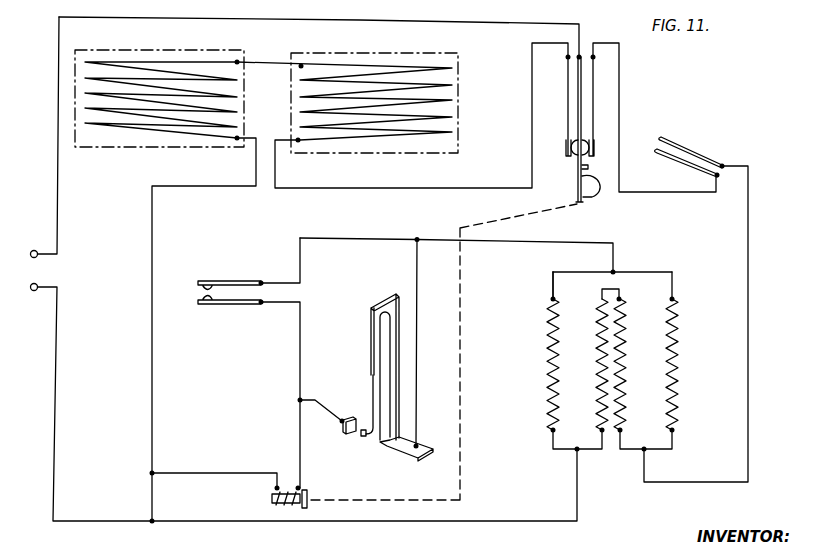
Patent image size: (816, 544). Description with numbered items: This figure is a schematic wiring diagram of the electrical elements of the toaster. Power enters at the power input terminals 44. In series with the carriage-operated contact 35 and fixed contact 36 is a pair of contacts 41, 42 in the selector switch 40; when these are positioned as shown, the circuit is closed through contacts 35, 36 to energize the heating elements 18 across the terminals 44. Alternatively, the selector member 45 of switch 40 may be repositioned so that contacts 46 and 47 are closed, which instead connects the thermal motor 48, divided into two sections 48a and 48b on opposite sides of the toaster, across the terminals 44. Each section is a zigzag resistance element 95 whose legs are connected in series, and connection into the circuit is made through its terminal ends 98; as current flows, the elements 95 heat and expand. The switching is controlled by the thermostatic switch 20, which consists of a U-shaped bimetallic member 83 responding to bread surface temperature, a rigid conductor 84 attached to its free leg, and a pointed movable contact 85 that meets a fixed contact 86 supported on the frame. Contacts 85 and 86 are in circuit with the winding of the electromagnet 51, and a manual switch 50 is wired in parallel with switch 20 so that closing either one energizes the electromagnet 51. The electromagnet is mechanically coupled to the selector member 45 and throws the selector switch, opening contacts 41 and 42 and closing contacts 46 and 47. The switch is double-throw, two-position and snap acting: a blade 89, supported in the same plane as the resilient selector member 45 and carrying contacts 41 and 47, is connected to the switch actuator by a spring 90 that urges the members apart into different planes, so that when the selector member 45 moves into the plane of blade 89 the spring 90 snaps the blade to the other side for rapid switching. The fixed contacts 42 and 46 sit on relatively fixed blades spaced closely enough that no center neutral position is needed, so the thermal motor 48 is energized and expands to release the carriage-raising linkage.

The heating elements 18 is at (543, 336).
The thermostatic switch 20 is at (370, 308).
The contact 35 is at (663, 136).
The fixed contact 36 is at (656, 155).
The selector switch 40 is at (569, 187).
The contact 41 is at (589, 146).
The contact 42 is at (590, 152).
The power input terminals 44 is at (40, 285).
The selector member 45 is at (577, 166).
The contact 46 is at (566, 152).
The contact 47 is at (573, 143).
The thermal motor 48 is at (254, 49).
The thermal motor section 48a is at (387, 68).
The thermal motor section 48b is at (147, 61).
The manual switch 50 is at (210, 280).
The electromagnet 51 is at (309, 490).
The U-shaped bimetallic member 83 is at (390, 301).
The rigid conductor 84 is at (372, 393).
The movable contact 85 is at (363, 437).
The fixed contact 86 is at (343, 434).
The blade 89 is at (589, 167).
The spring 90 is at (592, 188).
The resistance element 95 is at (190, 62).
The terminal ends 98 is at (240, 66).